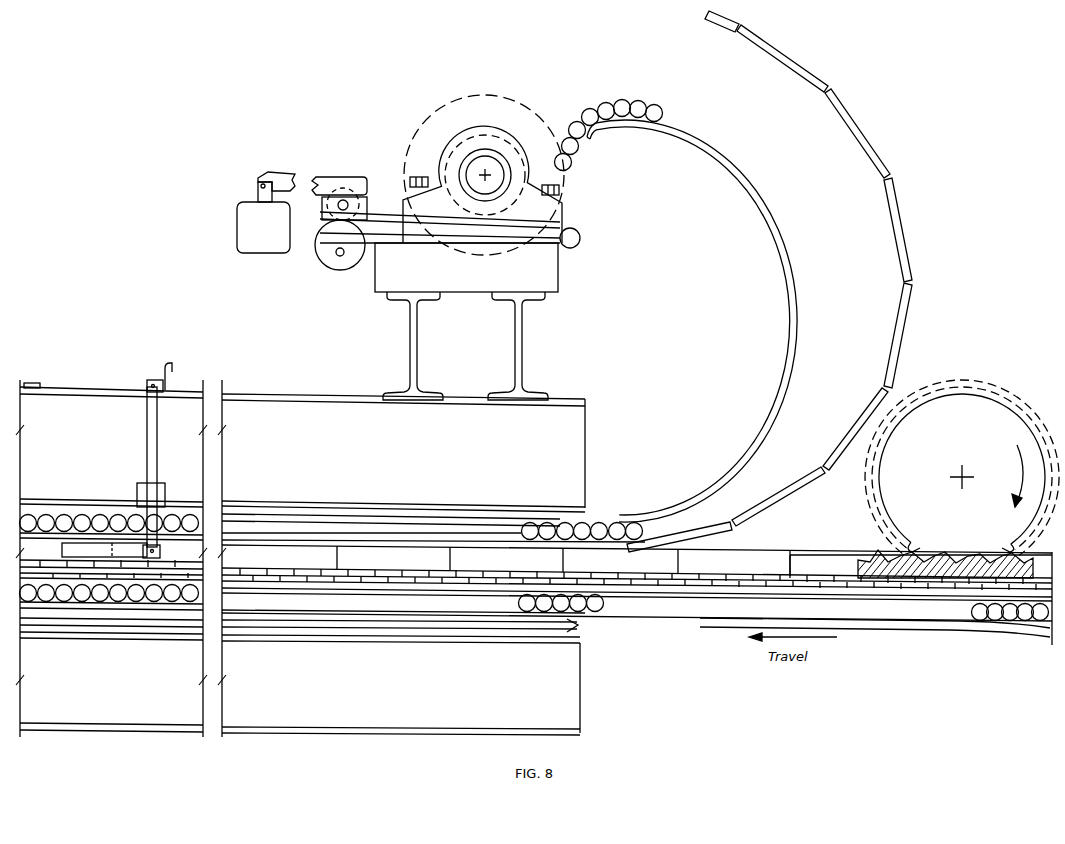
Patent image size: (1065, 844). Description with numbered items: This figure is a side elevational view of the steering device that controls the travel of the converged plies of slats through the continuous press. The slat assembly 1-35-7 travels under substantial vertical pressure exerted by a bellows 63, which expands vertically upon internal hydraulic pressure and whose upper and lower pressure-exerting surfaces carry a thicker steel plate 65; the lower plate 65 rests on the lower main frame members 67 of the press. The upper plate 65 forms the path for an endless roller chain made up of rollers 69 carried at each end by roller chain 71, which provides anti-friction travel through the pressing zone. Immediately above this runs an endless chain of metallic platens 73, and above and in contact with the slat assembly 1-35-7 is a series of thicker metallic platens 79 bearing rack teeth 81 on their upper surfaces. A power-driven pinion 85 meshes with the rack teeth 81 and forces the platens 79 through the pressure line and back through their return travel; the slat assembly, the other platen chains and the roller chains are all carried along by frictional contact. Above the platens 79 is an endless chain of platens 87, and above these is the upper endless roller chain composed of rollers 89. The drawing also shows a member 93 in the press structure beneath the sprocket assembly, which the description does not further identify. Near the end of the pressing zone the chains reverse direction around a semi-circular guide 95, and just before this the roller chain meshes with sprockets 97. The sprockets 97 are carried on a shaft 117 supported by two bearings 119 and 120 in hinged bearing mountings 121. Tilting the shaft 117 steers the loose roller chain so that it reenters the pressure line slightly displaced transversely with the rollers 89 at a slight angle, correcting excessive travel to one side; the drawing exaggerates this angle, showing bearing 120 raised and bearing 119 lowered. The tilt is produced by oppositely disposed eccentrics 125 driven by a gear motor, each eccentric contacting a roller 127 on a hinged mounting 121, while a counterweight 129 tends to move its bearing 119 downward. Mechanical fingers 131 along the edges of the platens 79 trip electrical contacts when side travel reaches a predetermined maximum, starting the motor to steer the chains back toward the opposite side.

The bellows 63 is at (140, 622).
The steel plate 65 is at (92, 608).
The lower main frame members 67 is at (113, 687).
The rollers 69 is at (602, 611).
The roller chain 71 is at (587, 603).
The platens 73 is at (790, 594).
The thicker metallic platens 79 is at (822, 552).
The rack teeth 81 is at (882, 556).
The power driven pinion 85 is at (953, 397).
The platens 87 is at (890, 228).
The rollers 89 is at (663, 114).
The support block 93 is at (360, 516).
The semi-circular guides 95 is at (791, 332).
The sprockets 97 is at (405, 152).
The shaft 117 is at (478, 163).
The bearing 119 is at (497, 140).
The bearing 120 is at (497, 132).
The hinged bearing mountings 121 is at (579, 243).
The eccentrics 125 is at (327, 267).
The roller 127 is at (352, 192).
The counterweight 129 is at (236, 233).
The mechanical fingers 131 is at (100, 548).
The slat assembly 1-35-7 is at (243, 577).